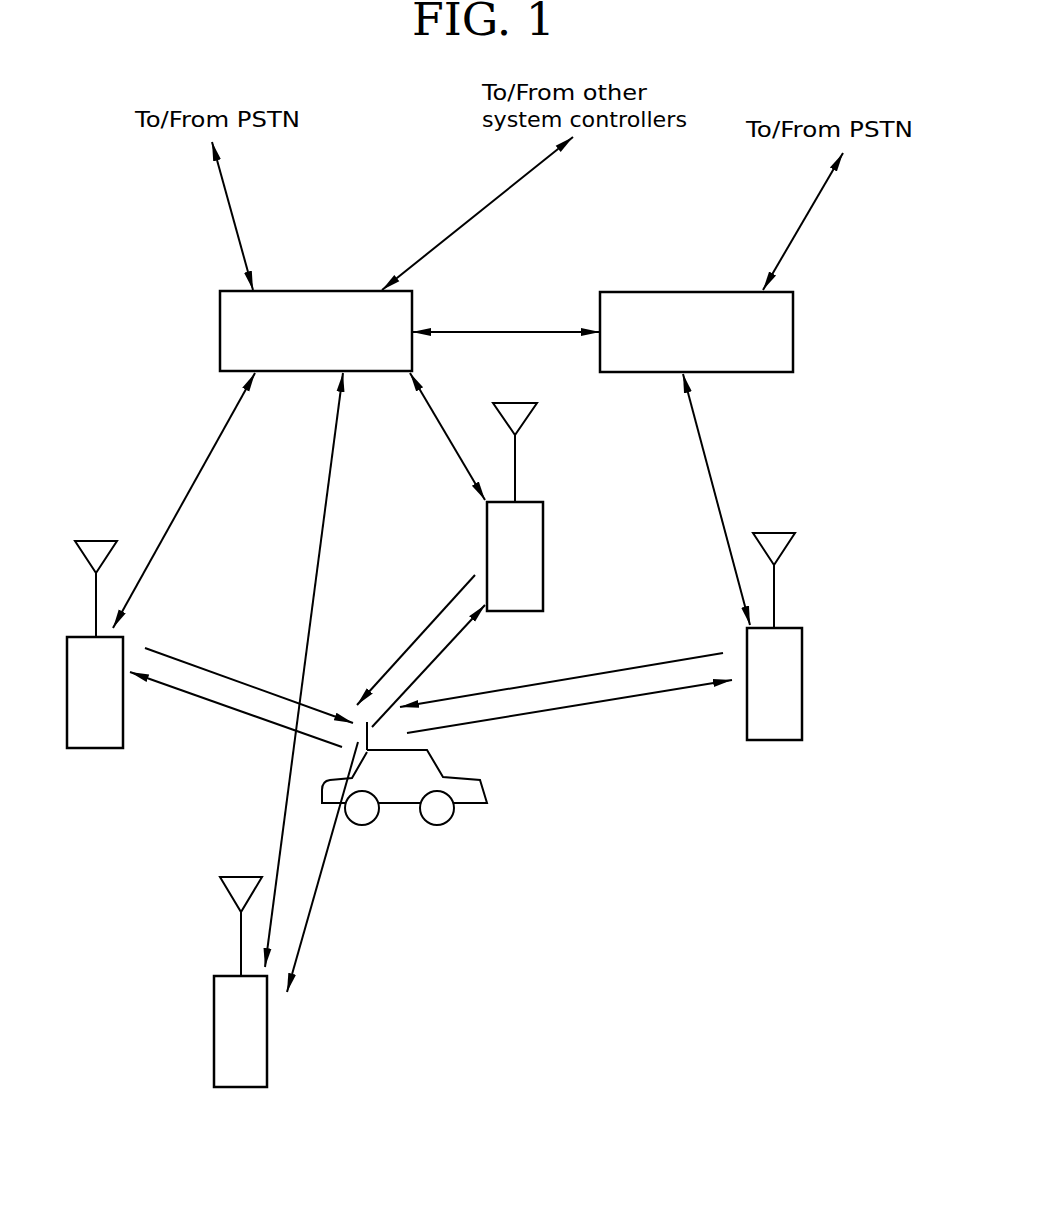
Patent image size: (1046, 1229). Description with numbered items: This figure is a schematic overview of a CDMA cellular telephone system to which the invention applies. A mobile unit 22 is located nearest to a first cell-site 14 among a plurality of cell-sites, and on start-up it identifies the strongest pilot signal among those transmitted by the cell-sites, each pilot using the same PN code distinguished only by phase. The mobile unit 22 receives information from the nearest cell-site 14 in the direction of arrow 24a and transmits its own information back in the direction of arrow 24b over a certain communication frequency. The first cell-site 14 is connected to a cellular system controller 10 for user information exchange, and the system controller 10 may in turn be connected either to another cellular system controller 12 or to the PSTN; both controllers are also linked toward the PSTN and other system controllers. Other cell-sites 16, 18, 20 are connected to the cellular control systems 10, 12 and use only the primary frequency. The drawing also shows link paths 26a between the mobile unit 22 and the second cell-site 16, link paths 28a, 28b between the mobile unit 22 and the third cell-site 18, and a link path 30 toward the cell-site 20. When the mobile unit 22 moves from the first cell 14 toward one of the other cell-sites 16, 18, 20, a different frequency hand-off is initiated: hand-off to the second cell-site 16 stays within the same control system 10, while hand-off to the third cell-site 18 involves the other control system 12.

The cellular system controller 10 is at (330, 291).
The cellular system controller 12 is at (700, 292).
The first cell-site 14 is at (86, 637).
The second cell-site 16 is at (543, 555).
The third cell-site 18 is at (803, 680).
The cell-site 20 is at (214, 1020).
The mobile unit 22 is at (487, 790).
The arrow 24a is at (221, 675).
The arrow 24b is at (202, 698).
The communication link 26a is at (417, 635).
The communication link 28a is at (613, 670).
The communication link 28b is at (615, 702).
The communication link 30 is at (316, 900).